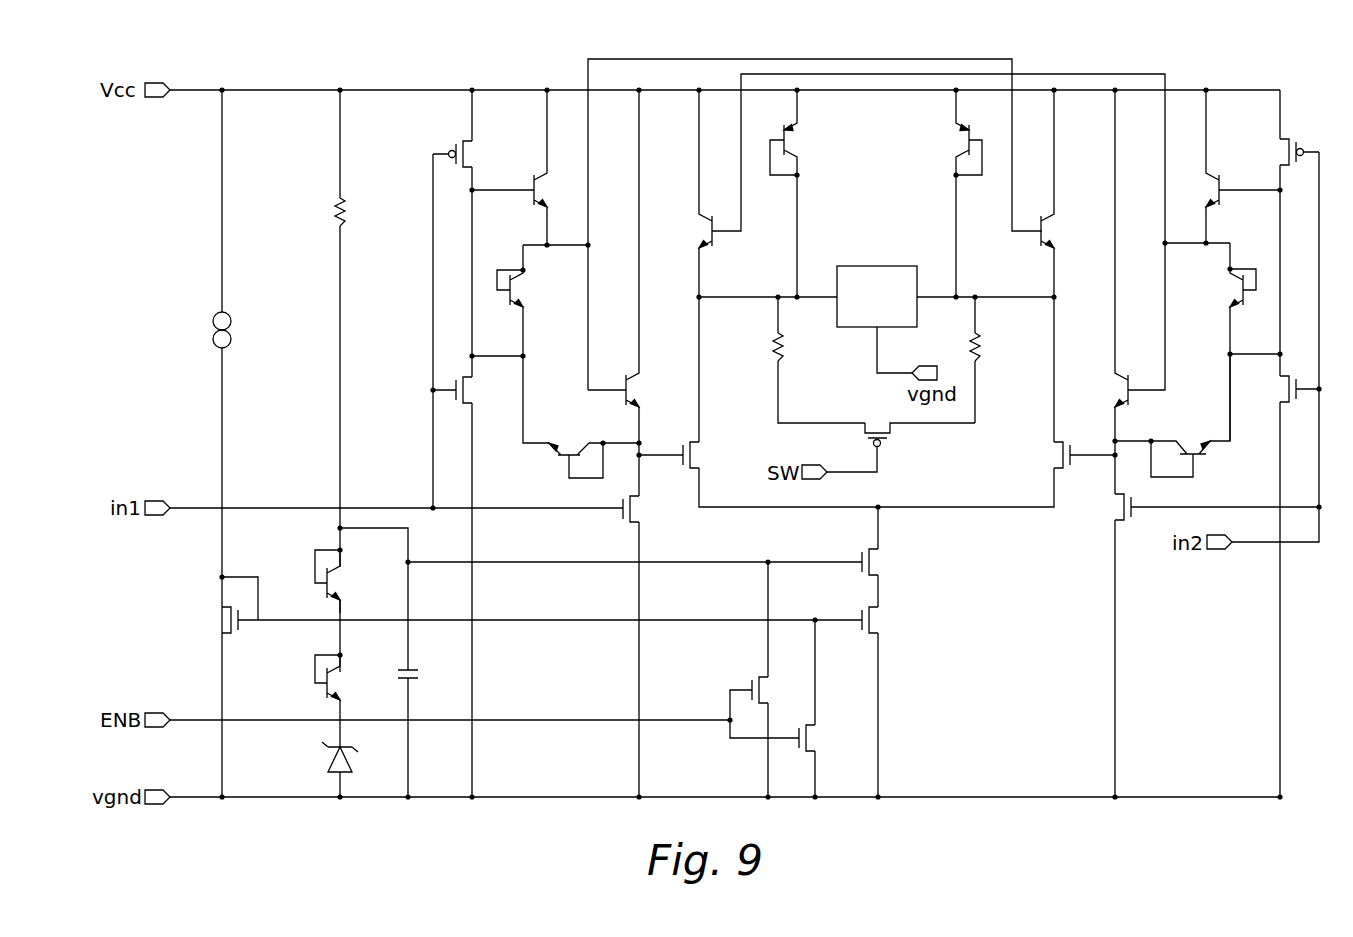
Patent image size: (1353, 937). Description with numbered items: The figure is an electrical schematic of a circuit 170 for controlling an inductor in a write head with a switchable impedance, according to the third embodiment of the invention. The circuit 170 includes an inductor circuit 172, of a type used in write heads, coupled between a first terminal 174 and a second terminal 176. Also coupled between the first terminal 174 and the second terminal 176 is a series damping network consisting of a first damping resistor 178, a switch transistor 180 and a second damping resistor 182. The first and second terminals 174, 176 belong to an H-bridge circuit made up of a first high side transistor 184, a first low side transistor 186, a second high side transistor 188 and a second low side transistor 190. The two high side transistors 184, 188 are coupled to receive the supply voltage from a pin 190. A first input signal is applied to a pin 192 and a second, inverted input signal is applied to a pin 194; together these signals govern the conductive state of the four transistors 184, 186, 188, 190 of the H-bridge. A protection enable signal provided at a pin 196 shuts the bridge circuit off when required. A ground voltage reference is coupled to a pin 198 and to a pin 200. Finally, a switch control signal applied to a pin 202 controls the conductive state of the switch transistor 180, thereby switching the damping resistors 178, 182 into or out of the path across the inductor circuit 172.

The circuit 170 is at (368, 78).
The inductor circuit 172 is at (877, 296).
The first terminal 174 is at (694, 299).
The second terminal 176 is at (1056, 300).
The first damping resistor 178 is at (772, 357).
The switch transistor 180 is at (876, 425).
The second damping resistor 182 is at (980, 355).
The first high side transistor 184 is at (706, 220).
The first low side transistor 186 is at (694, 445).
The second high side transistor 188 is at (1045, 230).
The second low side transistor / pin 190 is at (1053, 450).
The pin 192 is at (152, 520).
The pin 194 is at (1212, 555).
The pin 196 is at (152, 732).
The pin 198 is at (152, 809).
The pin 200 is at (924, 362).
The pin 202 is at (812, 468).